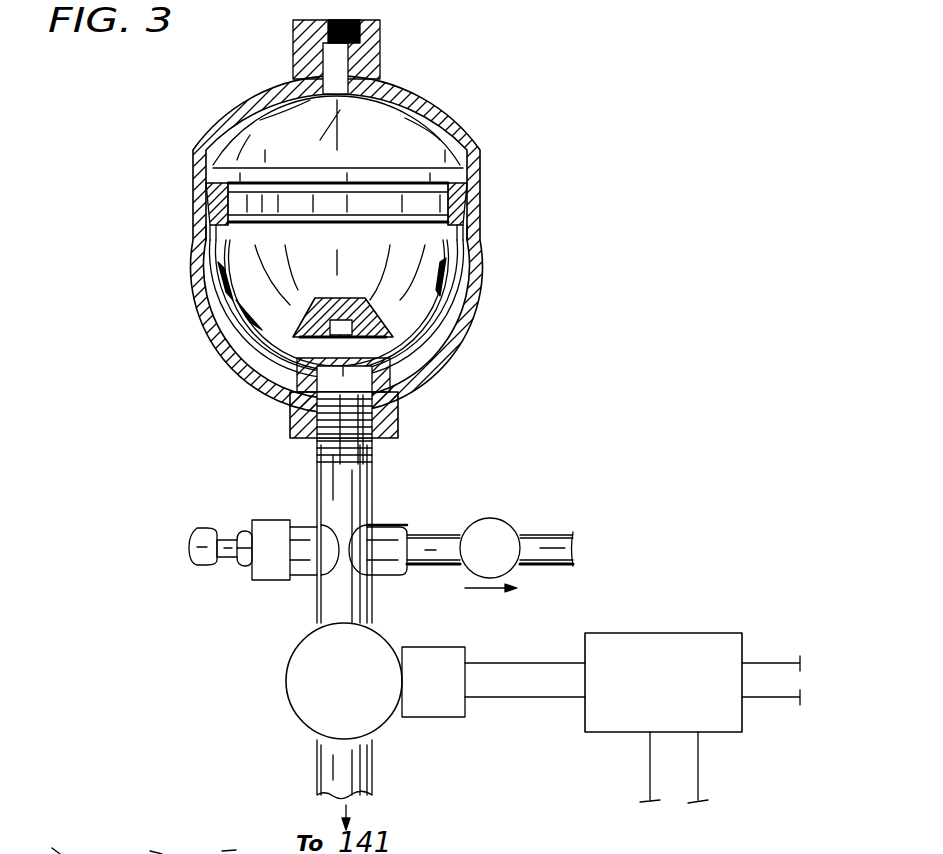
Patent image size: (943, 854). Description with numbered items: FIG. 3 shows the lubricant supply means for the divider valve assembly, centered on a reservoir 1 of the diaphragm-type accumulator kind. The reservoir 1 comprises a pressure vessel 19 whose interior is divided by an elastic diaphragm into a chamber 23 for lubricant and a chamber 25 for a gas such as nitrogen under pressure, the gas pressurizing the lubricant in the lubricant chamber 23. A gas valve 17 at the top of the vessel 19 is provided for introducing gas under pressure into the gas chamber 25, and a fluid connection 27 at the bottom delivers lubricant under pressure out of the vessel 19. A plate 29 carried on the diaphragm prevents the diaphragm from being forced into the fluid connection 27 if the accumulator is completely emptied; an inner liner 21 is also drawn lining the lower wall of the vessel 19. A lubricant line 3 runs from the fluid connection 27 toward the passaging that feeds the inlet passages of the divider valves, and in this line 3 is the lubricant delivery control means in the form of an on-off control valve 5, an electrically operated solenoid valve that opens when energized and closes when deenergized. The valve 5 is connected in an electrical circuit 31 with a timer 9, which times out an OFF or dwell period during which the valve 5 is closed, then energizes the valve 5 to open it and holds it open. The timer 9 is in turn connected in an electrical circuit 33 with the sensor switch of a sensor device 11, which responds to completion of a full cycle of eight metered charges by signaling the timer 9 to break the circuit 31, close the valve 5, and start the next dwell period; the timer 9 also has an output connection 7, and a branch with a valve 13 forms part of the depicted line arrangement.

The reservoir 1 is at (470, 110).
The lubricant line 3 is at (317, 486).
The on-off control valve 5 is at (297, 712).
The output line 7 is at (755, 649).
The timer 9 is at (630, 633).
The sensor device 11 is at (198, 566).
The valve 13 is at (505, 521).
The gas valve 17 is at (337, 62).
The pressure vessel 19 is at (222, 318).
The liner 21 is at (452, 270).
The lubricant chamber 23 is at (432, 322).
The gas chamber 25 is at (255, 140).
The fluid connection 27 is at (290, 398).
The plate 29 is at (375, 338).
The electrical circuit 31 is at (542, 698).
The electrical circuit 33 is at (700, 780).